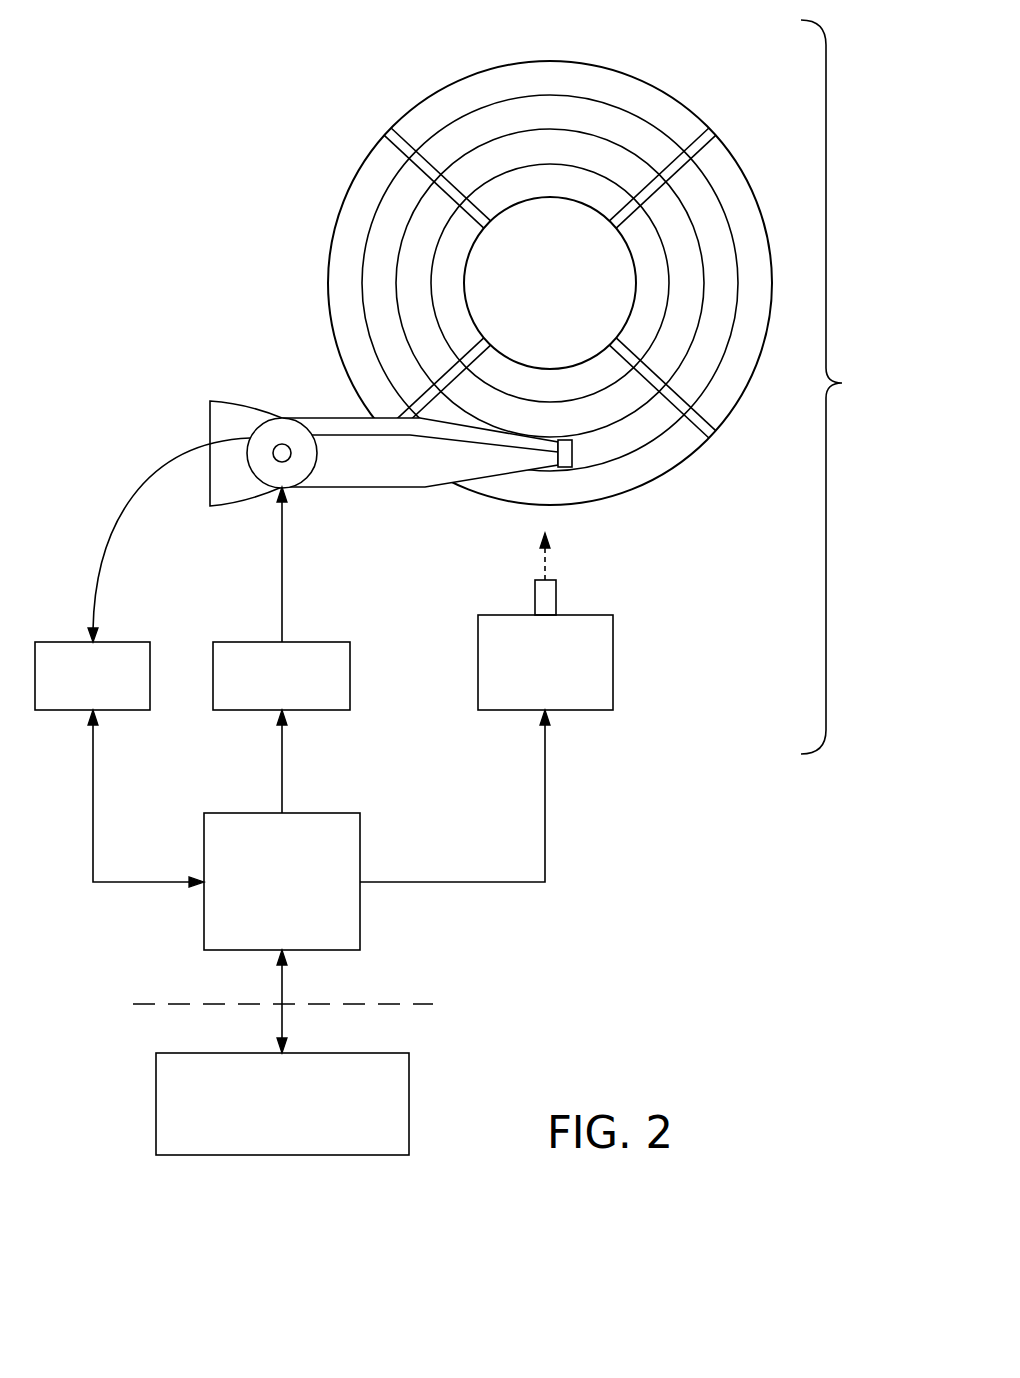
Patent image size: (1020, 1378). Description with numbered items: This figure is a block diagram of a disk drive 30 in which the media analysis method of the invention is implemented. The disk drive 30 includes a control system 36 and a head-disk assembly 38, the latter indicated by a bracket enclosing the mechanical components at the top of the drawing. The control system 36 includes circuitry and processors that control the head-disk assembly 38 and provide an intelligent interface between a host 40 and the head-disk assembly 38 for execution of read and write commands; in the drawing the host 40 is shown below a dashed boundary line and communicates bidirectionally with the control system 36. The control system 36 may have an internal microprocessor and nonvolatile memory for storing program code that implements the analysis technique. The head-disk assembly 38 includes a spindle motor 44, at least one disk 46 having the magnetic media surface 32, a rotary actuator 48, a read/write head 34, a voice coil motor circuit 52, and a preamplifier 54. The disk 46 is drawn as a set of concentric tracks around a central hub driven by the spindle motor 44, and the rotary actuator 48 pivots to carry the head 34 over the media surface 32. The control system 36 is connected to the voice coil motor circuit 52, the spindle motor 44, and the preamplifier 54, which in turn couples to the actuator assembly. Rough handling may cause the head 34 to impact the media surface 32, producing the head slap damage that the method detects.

The disk drive 30 is at (645, 952).
The magnetic media surface 32 is at (586, 114).
The read/write head 34 is at (566, 452).
The control system 36 is at (296, 918).
The head-disk assembly 38 is at (845, 387).
The host 40 is at (298, 1128).
The spindle motor 44 is at (558, 700).
The disk 46 is at (430, 95).
The rotary actuator 48 is at (392, 466).
The voice coil motor circuit 52 is at (296, 698).
The preamplifier 54 is at (105, 698).